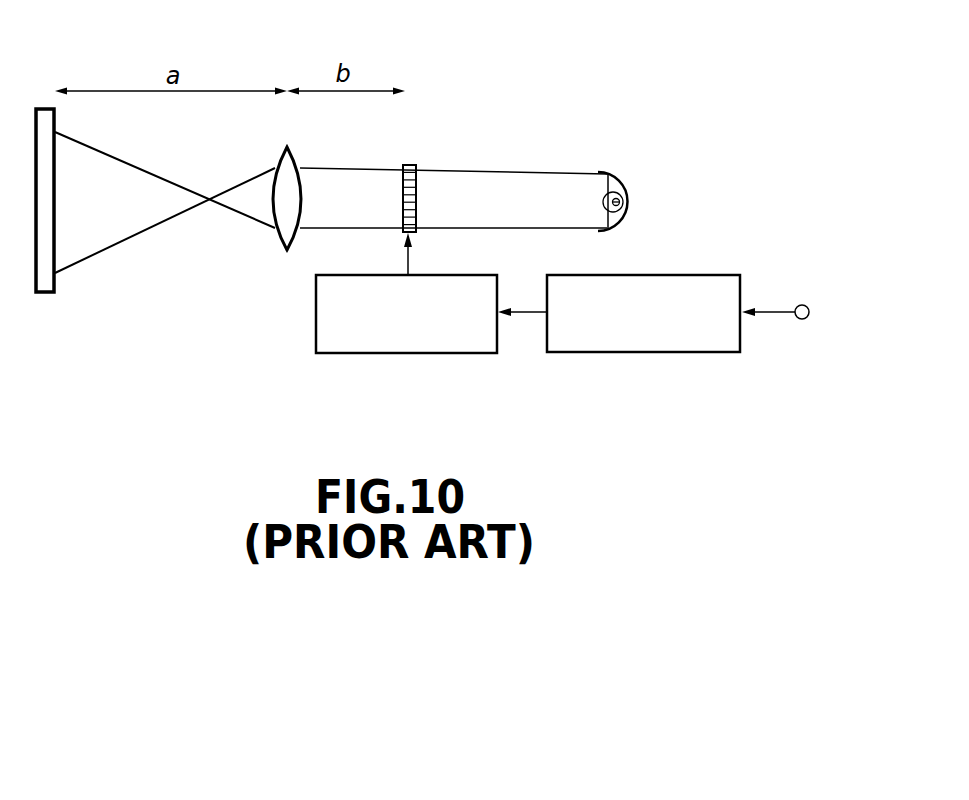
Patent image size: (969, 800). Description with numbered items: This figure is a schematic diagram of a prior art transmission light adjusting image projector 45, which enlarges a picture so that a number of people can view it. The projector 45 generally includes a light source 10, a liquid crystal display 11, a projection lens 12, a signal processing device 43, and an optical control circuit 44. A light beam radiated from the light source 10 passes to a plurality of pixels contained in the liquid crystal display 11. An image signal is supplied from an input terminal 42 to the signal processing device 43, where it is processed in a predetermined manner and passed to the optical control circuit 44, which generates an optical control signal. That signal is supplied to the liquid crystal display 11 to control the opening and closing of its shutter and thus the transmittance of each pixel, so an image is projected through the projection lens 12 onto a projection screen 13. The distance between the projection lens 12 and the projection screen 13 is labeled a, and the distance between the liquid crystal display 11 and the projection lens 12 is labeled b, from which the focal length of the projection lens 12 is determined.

The light source 10 is at (624, 178).
The liquid crystal display 11 is at (410, 163).
The projection lens 12 is at (275, 238).
The projection screen 13 is at (46, 294).
The input terminal 42 is at (801, 320).
The signal processing device 43 is at (638, 353).
The optical control circuit 44 is at (408, 355).
The projector 45 is at (550, 119).